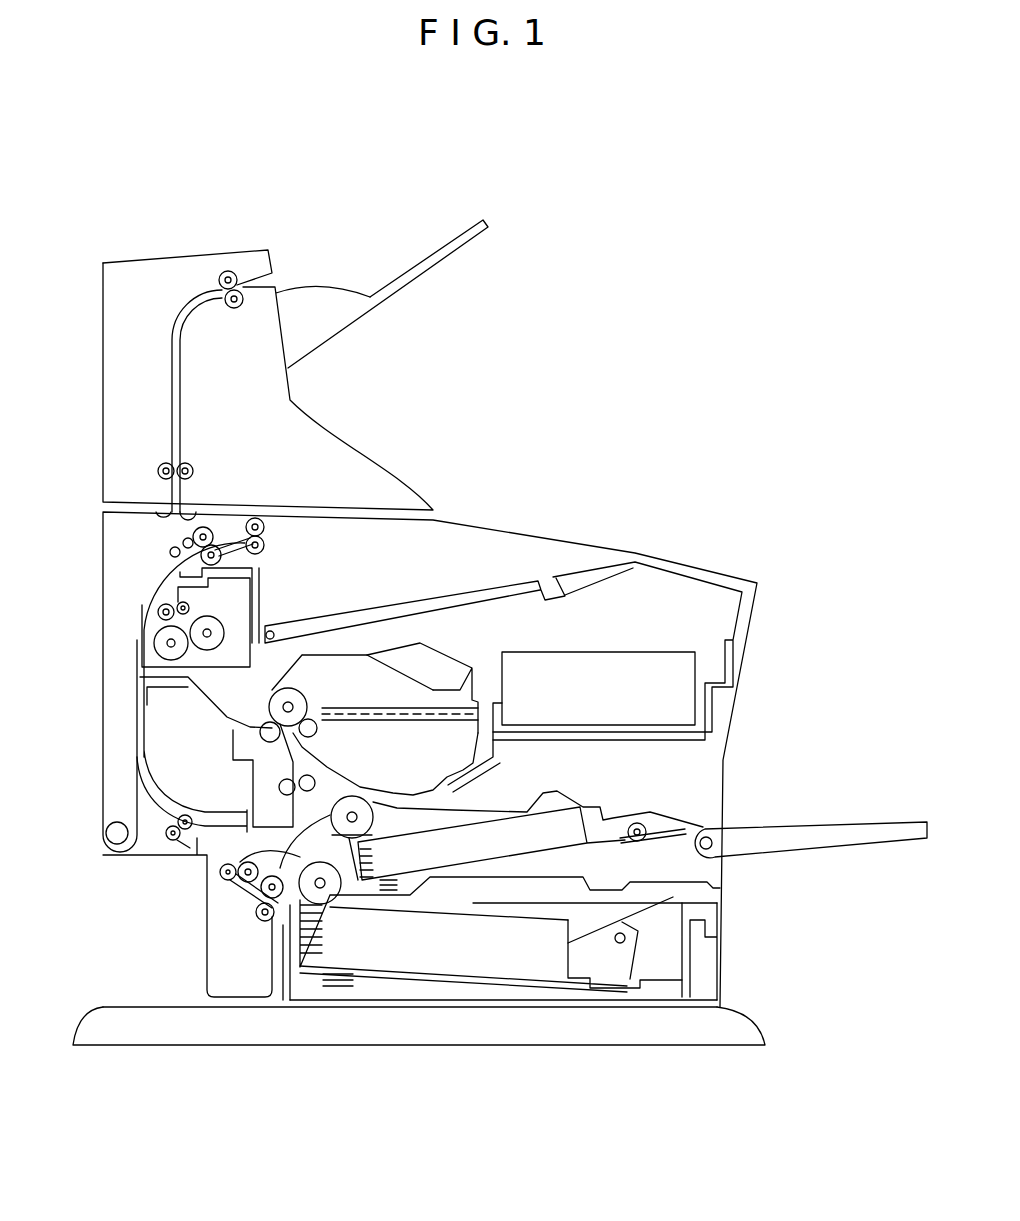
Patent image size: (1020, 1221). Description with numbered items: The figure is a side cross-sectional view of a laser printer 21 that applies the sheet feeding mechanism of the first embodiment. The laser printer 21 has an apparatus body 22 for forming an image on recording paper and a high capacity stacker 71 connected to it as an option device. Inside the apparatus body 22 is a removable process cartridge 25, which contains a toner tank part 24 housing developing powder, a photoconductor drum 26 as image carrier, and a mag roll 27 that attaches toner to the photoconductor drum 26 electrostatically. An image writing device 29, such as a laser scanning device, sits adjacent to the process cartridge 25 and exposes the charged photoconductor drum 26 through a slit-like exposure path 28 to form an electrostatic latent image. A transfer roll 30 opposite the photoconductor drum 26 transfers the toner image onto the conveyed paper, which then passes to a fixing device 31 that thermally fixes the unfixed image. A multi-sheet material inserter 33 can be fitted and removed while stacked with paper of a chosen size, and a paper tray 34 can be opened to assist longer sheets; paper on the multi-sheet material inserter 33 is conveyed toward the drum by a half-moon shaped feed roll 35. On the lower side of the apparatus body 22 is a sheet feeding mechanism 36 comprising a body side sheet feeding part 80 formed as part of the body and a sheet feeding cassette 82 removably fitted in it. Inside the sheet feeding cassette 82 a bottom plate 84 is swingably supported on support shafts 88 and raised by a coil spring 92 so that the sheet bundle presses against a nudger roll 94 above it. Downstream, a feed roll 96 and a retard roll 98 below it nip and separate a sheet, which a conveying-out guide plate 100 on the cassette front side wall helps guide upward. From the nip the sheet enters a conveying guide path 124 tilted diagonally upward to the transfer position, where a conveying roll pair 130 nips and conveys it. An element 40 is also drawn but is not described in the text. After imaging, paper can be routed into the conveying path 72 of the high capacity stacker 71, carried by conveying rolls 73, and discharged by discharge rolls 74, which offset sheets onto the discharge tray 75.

The laser printer 21 is at (746, 373).
The apparatus body 22 is at (757, 583).
The toner tank part 24 is at (320, 660).
The process cartridge 25 is at (447, 652).
The photoconductor drum 26 is at (302, 702).
The mag roll 27 is at (318, 730).
The exposure path 28 is at (412, 721).
The image writing device (ROS) 29 is at (660, 652).
The transfer roll 30 is at (260, 738).
The fixing device 31 is at (142, 640).
The multi-sheet material inserter 33 is at (683, 815).
The paper tray 34 is at (868, 828).
The half-moon shaped feed roll 35 is at (455, 808).
The sheet feeding mechanism 36 is at (784, 969).
The registration rollers 40 is at (279, 790).
The high capacity stacker (HCS) 71 is at (197, 256).
The conveying path 72 is at (172, 376).
The conveying rolls 73 is at (158, 468).
The discharge rolls 74 is at (237, 285).
The discharge tray 75 is at (463, 227).
The body side sheet feeding part 80 is at (103, 935).
The sheet feeding cassette 82 is at (720, 913).
The bottom plate 84 is at (536, 973).
The support shafts 88 is at (673, 897).
The coil spring 92 is at (358, 980).
The nudger roll 94 is at (342, 900).
The feed roll 96 is at (277, 872).
The retard roll 98 is at (260, 925).
The conveying-out guide plate 100 is at (282, 937).
The conveying guide path 124 is at (258, 893).
The conveying roll pair 130 is at (220, 878).